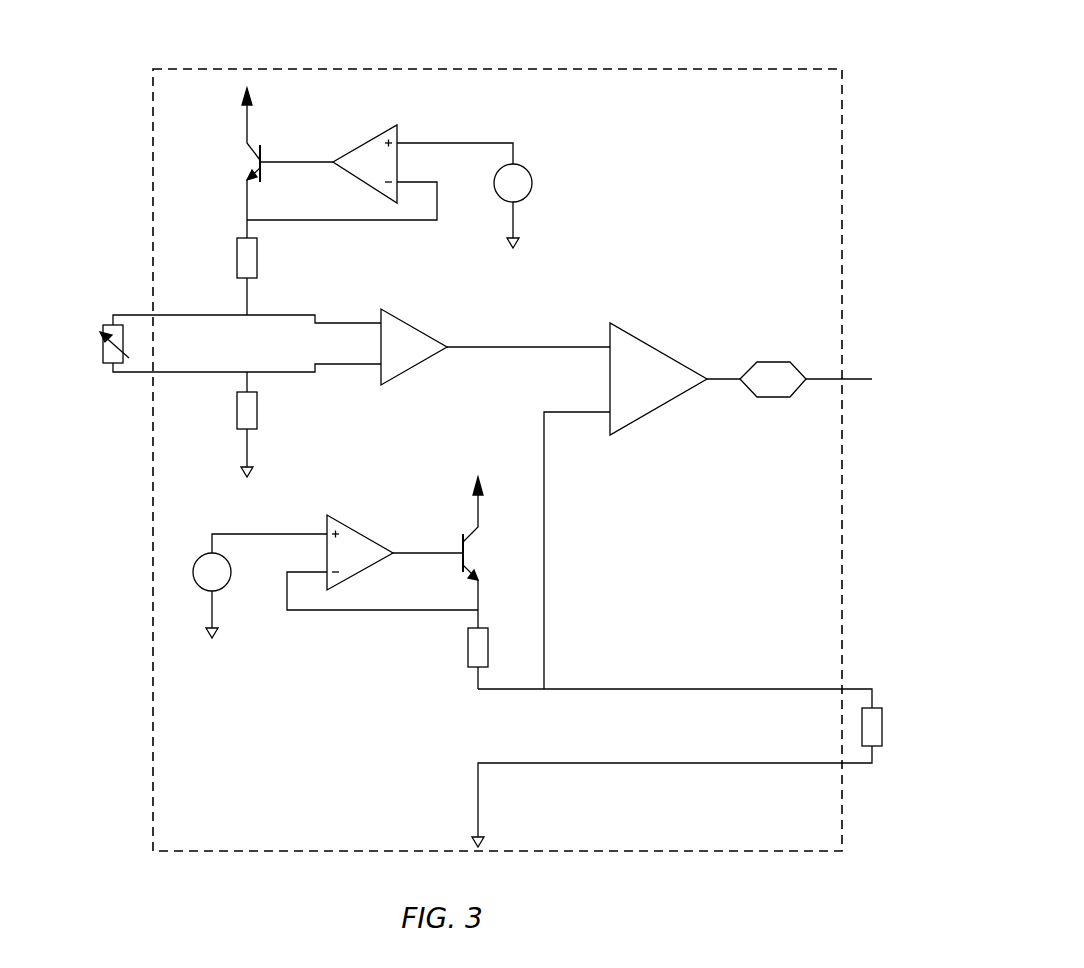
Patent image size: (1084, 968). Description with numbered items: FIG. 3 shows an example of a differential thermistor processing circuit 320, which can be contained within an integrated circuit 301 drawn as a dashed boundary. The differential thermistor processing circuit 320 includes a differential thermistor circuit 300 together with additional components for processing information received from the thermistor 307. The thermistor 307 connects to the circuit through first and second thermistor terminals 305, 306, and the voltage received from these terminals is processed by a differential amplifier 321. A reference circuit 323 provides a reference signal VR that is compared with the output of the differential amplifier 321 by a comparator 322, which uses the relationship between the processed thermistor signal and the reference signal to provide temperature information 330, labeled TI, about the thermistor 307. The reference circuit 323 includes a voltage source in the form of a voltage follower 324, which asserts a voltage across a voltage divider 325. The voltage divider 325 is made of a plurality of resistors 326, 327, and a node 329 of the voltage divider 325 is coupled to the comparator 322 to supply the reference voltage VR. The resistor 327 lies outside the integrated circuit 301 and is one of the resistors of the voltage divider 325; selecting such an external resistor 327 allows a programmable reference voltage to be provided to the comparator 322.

The differential thermistor circuit 300 is at (366, 112).
The integrated circuit 301 is at (628, 69).
The first thermistor terminal 305 is at (131, 304).
The second thermistor terminal 306 is at (131, 386).
The thermistor 307 is at (101, 357).
The differential thermistor processing circuit 320 is at (627, 147).
The differential amplifier 321 is at (412, 323).
The comparator 322 is at (655, 348).
The reference circuit 323 is at (417, 485).
The voltage follower 324 is at (313, 662).
The voltage divider 325 is at (610, 631).
The resistor 326 is at (468, 640).
The external resistor 327 is at (882, 738).
The node 329 is at (553, 708).
The temperature information 330 is at (754, 362).